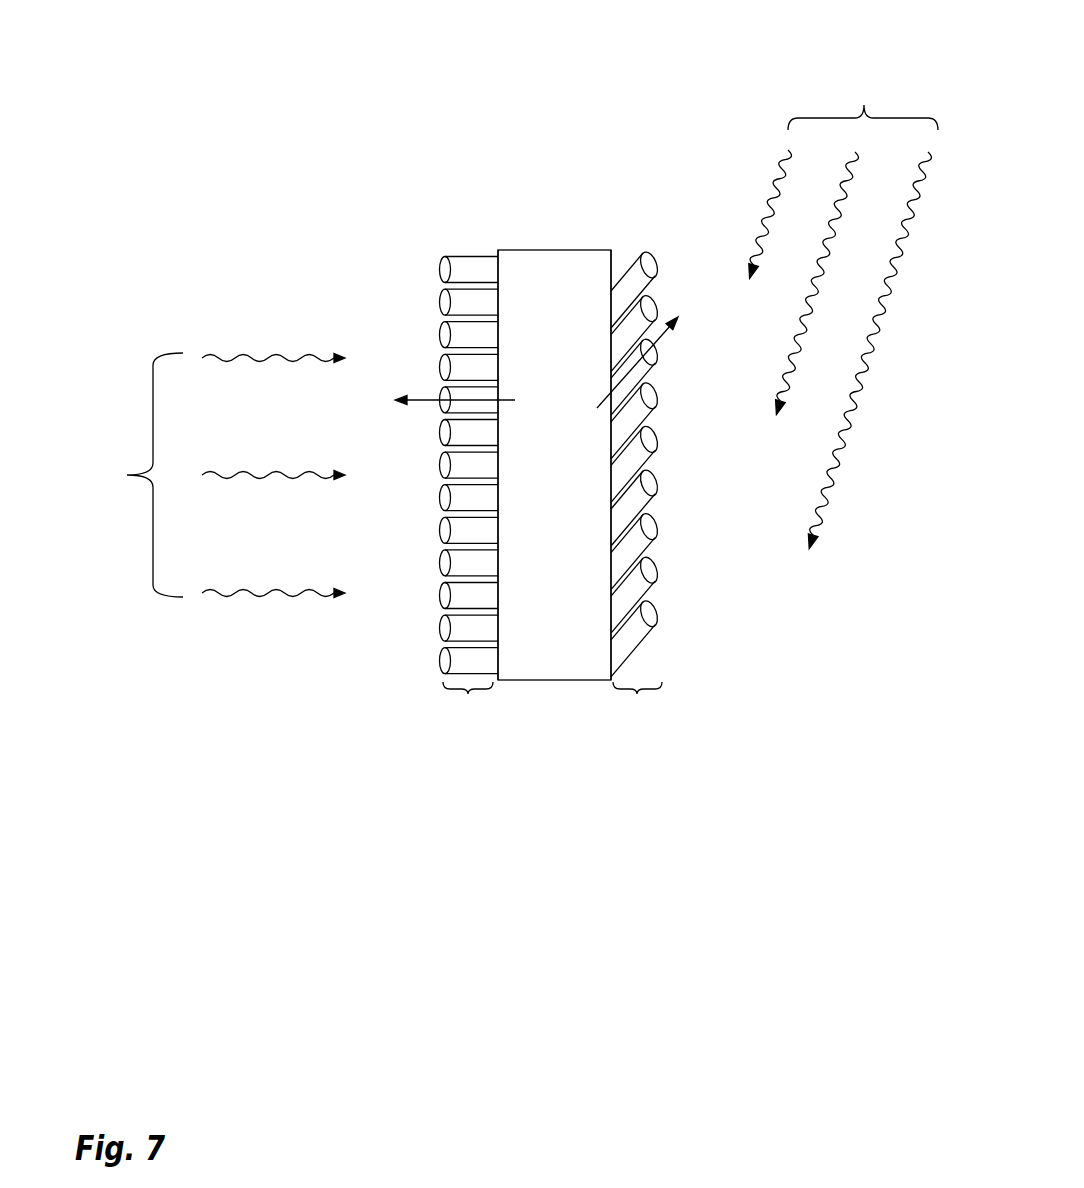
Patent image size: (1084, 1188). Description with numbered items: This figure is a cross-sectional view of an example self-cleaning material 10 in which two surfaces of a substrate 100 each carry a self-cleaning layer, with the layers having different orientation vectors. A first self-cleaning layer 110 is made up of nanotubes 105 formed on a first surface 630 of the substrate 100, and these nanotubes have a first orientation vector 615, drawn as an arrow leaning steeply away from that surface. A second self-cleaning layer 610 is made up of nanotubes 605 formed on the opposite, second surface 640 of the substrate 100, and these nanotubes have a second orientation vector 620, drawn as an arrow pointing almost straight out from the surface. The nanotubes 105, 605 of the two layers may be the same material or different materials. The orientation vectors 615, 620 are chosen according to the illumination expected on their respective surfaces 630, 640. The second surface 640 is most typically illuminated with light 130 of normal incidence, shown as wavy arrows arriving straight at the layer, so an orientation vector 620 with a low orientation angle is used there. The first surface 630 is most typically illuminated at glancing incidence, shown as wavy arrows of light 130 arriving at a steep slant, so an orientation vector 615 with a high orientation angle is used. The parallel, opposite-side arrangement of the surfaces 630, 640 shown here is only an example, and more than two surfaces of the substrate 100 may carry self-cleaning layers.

The self-cleaning material 10 is at (471, 122).
The substrate 100 is at (573, 477).
The nanotubes 105 is at (659, 486).
The self-cleaning layer 110 is at (637, 694).
The light 130 is at (127, 475).
The nanotubes 605 is at (440, 462).
The self-cleaning layer 610 is at (468, 694).
The first orientation vector 615 is at (663, 335).
The second orientation vector 620 is at (405, 398).
The first surface 630 is at (611, 250).
The second surface 640 is at (497, 250).